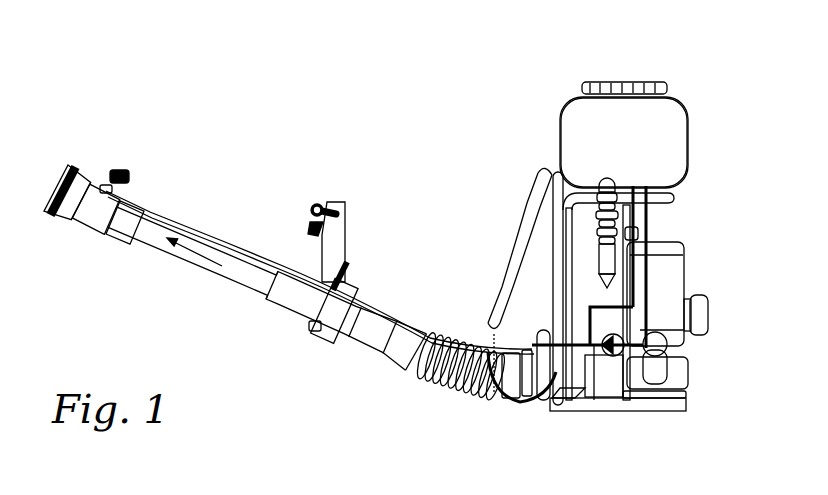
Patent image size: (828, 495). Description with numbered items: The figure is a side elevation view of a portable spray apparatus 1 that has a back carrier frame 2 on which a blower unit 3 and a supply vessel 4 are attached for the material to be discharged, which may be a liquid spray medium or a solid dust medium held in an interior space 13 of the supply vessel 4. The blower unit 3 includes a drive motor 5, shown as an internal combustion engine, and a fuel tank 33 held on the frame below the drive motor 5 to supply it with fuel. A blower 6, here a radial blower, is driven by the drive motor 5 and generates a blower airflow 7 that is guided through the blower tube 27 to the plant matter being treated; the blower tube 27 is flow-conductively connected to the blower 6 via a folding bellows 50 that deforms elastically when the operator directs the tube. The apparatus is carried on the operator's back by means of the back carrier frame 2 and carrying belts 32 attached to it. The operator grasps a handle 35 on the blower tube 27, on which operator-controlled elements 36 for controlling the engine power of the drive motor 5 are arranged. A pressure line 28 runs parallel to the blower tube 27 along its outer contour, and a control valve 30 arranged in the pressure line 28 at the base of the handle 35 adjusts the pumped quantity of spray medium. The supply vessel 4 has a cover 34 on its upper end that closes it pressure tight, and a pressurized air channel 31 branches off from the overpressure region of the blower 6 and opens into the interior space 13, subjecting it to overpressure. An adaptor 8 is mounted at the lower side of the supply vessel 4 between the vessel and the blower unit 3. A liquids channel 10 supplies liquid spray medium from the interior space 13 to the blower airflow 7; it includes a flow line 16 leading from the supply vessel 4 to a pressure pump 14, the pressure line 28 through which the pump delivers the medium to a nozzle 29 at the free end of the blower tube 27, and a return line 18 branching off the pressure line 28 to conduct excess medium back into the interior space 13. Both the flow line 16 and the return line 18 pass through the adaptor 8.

The portable spray apparatus 1 is at (413, 100).
The back carrier frame 2 is at (555, 298).
The blower unit 3 is at (700, 351).
The supply vessel 4 is at (560, 100).
The drive motor 5 is at (668, 278).
The blower 6 is at (595, 382).
The blower airflow 7 is at (193, 255).
The adaptor 8 is at (664, 196).
The liquids channel 10 is at (421, 306).
The interior space 13 is at (634, 151).
The pressure pump 14 is at (618, 352).
The flow line 16 is at (658, 307).
The return line 18 is at (648, 297).
The blower tube 27 is at (199, 280).
The pressure line 28 is at (205, 244).
The nozzle 29 is at (102, 176).
The control valve 30 is at (349, 270).
The pressurized air channel 31 is at (600, 215).
The carrying belts 32 is at (517, 257).
The fuel tank 33 is at (682, 376).
The cover 34 is at (635, 80).
The handle 35 is at (340, 233).
The operator-controlled elements 36 is at (322, 222).
The folding bellows 50 is at (447, 387).